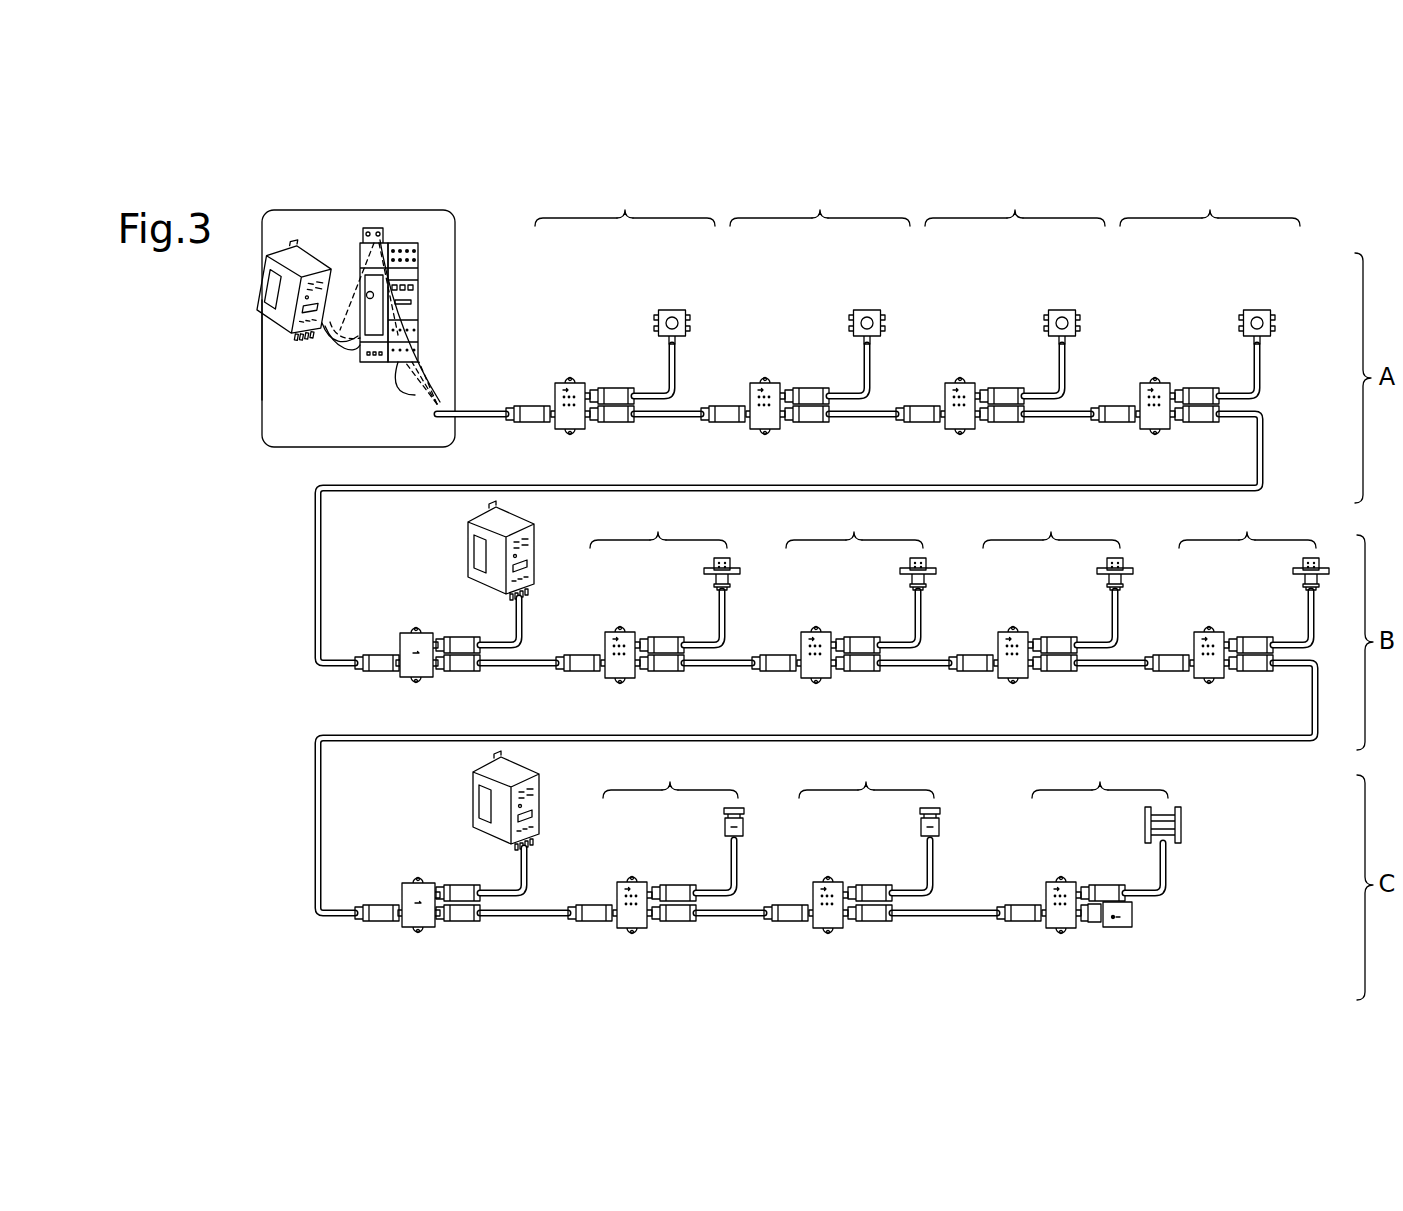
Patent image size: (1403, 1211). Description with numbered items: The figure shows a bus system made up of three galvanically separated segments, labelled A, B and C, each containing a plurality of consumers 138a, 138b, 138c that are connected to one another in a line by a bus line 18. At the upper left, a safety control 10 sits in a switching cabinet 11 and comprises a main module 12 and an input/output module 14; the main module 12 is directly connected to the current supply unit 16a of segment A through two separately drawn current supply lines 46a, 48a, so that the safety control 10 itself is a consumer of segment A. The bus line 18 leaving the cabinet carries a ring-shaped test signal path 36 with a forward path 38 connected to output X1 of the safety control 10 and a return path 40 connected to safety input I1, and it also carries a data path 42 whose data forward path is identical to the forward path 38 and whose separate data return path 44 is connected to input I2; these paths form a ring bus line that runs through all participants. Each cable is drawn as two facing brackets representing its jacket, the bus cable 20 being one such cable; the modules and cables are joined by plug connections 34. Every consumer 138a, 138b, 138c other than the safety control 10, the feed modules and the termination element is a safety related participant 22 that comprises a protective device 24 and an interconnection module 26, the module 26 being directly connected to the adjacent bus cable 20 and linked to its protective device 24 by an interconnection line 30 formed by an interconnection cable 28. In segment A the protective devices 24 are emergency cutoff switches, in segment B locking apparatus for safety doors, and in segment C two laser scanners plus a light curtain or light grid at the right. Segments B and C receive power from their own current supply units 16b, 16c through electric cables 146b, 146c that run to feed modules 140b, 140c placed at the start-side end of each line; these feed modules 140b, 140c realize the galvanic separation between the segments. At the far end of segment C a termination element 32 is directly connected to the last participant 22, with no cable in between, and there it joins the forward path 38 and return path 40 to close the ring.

The safety control 10 is at (450, 268).
The switching cabinet 11 is at (262, 436).
The main module 12 is at (380, 232).
The input/output module 14 is at (420, 252).
The current supply unit 16a is at (309, 240).
The current supply unit 16b is at (468, 545).
The current supply unit 16c is at (473, 795).
The bus line 18 is at (771, 692).
The bus cable 20 is at (494, 420).
The safety related participant 22 is at (936, 500).
The protective device 24 is at (680, 300).
The interconnection module 26 is at (573, 432).
The interconnection cable 28 is at (990, 615).
The interconnection line 30 is at (677, 379).
The termination element 32 is at (1122, 928).
The plug connection 34 is at (532, 423).
The test signal path 36 is at (491, 363).
The forward path 38 is at (440, 404).
The return path 40 is at (442, 406).
The data path 42 is at (481, 344).
The data return path 44 is at (438, 402).
The current supply line 46a is at (322, 327).
The current supply line 48a is at (345, 333).
The consumer 138a is at (917, 201).
The consumer 138b is at (397, 710).
The consumer 138c is at (1175, 953).
The feed module 140b is at (414, 632).
The feed module 140c is at (415, 882).
The electric cable 146b is at (515, 612).
The electric cable 146c is at (518, 857).